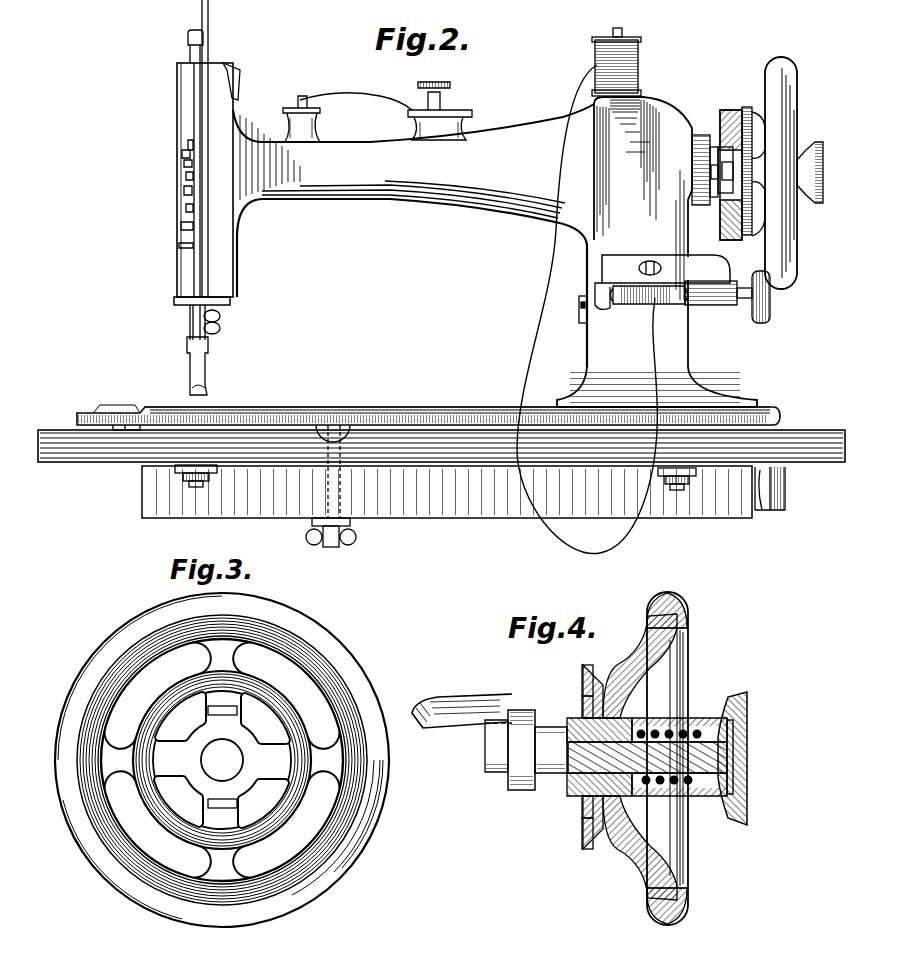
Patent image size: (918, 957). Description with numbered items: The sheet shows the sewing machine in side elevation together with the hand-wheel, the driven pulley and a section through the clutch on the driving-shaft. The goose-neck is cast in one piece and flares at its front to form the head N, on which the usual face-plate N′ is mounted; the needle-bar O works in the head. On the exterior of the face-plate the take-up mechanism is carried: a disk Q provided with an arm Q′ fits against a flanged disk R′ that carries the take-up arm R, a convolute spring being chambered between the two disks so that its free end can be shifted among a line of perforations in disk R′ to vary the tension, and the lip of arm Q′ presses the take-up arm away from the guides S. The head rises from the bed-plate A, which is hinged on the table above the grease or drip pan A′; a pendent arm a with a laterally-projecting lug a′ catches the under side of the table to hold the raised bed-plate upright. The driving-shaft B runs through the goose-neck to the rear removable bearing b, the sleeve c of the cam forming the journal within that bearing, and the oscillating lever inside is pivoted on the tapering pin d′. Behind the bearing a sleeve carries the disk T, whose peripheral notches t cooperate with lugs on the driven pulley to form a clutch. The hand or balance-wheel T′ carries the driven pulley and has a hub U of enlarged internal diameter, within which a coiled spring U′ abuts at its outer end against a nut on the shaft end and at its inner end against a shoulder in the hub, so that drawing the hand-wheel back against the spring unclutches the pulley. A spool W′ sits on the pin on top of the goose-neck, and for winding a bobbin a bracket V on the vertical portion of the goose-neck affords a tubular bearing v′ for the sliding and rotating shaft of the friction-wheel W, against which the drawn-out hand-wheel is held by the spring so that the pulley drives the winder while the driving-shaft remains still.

In FIG. 2, the head N is at (230, 156).
In FIG. 2, the needle-bar O is at (204, 148).
In FIG. 2, the face-plate N′ is at (180, 141).
In FIG. 2, the disk R′ is at (182, 153).
In FIG. 2, the tension screw v is at (185, 163).
In FIG. 2, the disk Q is at (186, 176).
In FIG. 2, the arm Q′ is at (186, 191).
In FIG. 2, the take-up arm R is at (181, 228).
In FIG. 2, the guides S is at (179, 246).
In FIG. 2, the bed-plate A is at (428, 367).
In FIG. 2, the spool W′ is at (638, 70).
In FIG. 2, the removable bearing b is at (700, 135).
In FIG. 2, the disk T is at (712, 147).
In FIG. 4, the disk T is at (585, 793).
In FIG. 2, the notches t is at (711, 172).
In FIG. 4, the notches t is at (582, 708).
In FIG. 2, the lug t′ is at (733, 172).
In FIG. 3, the lug t′ is at (222, 715).
In FIG. 4, the lug t′ is at (585, 690).
In FIG. 2, the hand-wheel T′ is at (771, 173).
In FIG. 3, the hand-wheel T′ is at (222, 760).
In FIG. 4, the hand-wheel T′ is at (676, 758).
In FIG. 2, the bracket V is at (700, 270).
In FIG. 2, the tubular bearing v′ is at (722, 282).
In FIG. 2, the friction-wheel W is at (755, 323).
In FIG. 2, the tapering pin d′ is at (576, 309).
In FIG. 2, the grease or drip pan A′ is at (728, 518).
In FIG. 2, the pendent arm a is at (775, 468).
In FIG. 2, the lug a′ is at (780, 490).
In FIG. 4, the driving-shaft B is at (569, 733).
In FIG. 4, the collar C′ is at (510, 750).
In FIG. 4, the sleeve c is at (551, 750).
In FIG. 4, the hub U is at (667, 718).
In FIG. 4, the coiled spring U′ is at (703, 800).